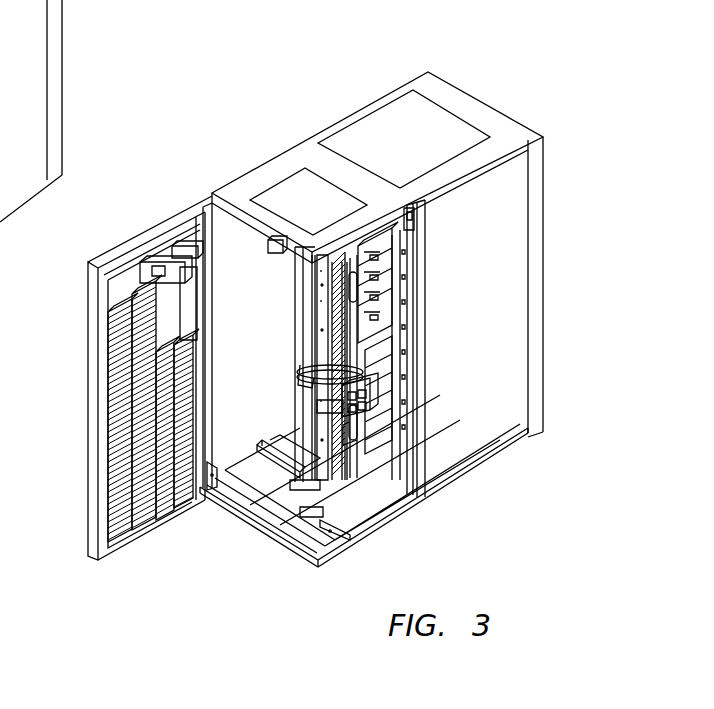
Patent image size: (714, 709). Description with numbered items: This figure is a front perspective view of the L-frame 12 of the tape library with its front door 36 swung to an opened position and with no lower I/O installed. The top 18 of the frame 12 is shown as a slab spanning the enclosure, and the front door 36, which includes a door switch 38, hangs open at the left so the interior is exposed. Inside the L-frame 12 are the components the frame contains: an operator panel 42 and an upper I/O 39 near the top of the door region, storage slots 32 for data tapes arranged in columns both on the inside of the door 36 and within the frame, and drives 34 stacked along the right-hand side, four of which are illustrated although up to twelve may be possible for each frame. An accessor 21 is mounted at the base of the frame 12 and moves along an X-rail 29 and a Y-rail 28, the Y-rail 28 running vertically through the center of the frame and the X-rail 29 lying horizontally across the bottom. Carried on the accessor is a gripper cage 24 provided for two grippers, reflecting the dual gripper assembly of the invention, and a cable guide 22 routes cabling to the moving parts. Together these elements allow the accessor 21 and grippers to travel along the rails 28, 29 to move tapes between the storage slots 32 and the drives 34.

The L-frame 12 is at (470, 96).
The top 18 is at (293, 173).
The accessor 21 is at (313, 493).
The cable guide 22 is at (343, 430).
The gripper cage 24 is at (373, 397).
The Y-rail 28 is at (300, 373).
The X-rail 29 is at (282, 467).
The storage slots 32 is at (110, 368).
The drives 34 is at (388, 243).
The front door 36 is at (88, 502).
The door switch 38 is at (250, 230).
The upper I/O 39 is at (157, 257).
The operator panel 42 is at (184, 243).